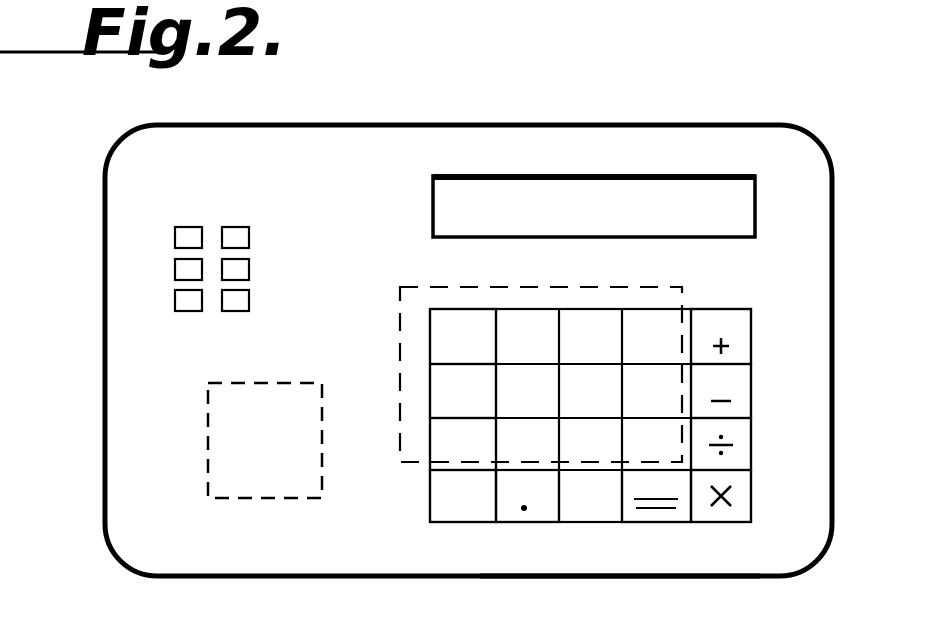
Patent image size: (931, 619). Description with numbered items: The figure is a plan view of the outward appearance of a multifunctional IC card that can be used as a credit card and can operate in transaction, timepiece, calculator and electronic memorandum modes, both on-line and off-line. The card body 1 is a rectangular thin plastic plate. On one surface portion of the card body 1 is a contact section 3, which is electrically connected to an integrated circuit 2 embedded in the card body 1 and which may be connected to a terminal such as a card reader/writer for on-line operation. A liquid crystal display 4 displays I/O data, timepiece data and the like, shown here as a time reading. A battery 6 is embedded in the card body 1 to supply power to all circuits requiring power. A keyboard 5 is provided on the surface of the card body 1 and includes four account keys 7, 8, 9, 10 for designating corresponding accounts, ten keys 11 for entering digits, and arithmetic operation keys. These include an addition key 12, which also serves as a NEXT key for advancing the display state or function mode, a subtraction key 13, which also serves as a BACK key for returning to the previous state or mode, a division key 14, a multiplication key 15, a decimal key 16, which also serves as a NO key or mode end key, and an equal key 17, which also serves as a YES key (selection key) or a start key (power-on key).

The card body 1 is at (411, 136).
The integrated circuit 2 is at (418, 283).
The contact section 3 is at (175, 233).
The liquid crystal display 4 is at (628, 176).
The keyboard 5 is at (631, 560).
The battery 6 is at (208, 425).
The account key 7 is at (440, 351).
The account key 8 is at (437, 381).
The account key 9 is at (437, 426).
The account key 10 is at (437, 481).
The ten keys 11 is at (571, 312).
The addition key 12 is at (752, 340).
The subtraction key 13 is at (752, 395).
The division key 14 is at (752, 440).
The multiplication key 15 is at (752, 495).
The decimal key 16 is at (503, 522).
The equal key 17 is at (681, 522).